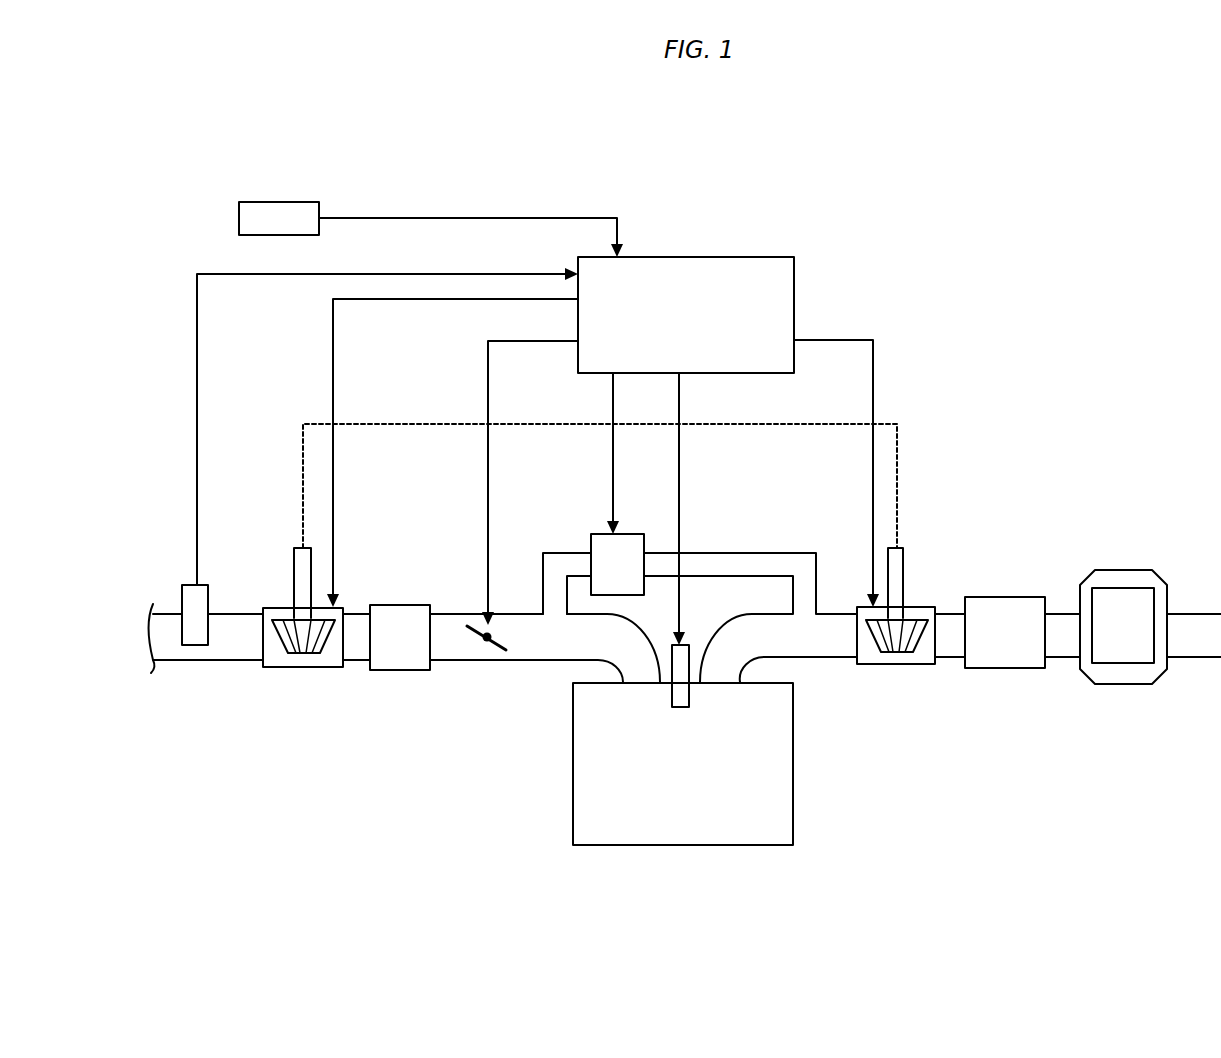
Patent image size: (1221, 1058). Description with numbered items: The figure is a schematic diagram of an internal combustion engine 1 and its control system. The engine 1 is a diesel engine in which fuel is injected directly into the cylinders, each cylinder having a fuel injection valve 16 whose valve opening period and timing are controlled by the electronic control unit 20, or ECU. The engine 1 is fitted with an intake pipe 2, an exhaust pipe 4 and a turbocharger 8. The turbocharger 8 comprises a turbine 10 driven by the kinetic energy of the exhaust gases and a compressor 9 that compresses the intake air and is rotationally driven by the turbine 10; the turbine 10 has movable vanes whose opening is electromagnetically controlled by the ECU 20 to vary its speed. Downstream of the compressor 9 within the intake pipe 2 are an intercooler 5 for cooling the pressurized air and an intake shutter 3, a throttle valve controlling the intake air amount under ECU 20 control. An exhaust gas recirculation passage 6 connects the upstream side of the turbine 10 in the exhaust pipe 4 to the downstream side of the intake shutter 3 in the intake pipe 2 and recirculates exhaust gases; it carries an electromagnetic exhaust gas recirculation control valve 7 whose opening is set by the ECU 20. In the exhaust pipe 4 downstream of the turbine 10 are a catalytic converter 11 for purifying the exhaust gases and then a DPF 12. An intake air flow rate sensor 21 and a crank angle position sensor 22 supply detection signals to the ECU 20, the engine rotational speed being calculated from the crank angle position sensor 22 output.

The internal combustion engine 1 is at (670, 846).
The intake pipe 2 is at (460, 612).
The intake shutter 3 is at (490, 650).
The exhaust pipe 4 is at (824, 660).
The intercooler 5 is at (400, 604).
The exhaust gas recirculation passage 6 is at (746, 553).
The exhaust gas recirculation control valve 7 is at (642, 534).
The turbocharger 8 is at (280, 566).
The compressor 9 is at (308, 668).
The turbine 10 is at (893, 665).
The catalytic converter 11 is at (1003, 597).
The DPF 12 is at (1118, 663).
The fuel injection valve 16 is at (689, 645).
The electronic control unit 20 is at (636, 257).
The intake air flow rate sensor 21 is at (192, 584).
The crank angle position sensor 22 is at (280, 202).